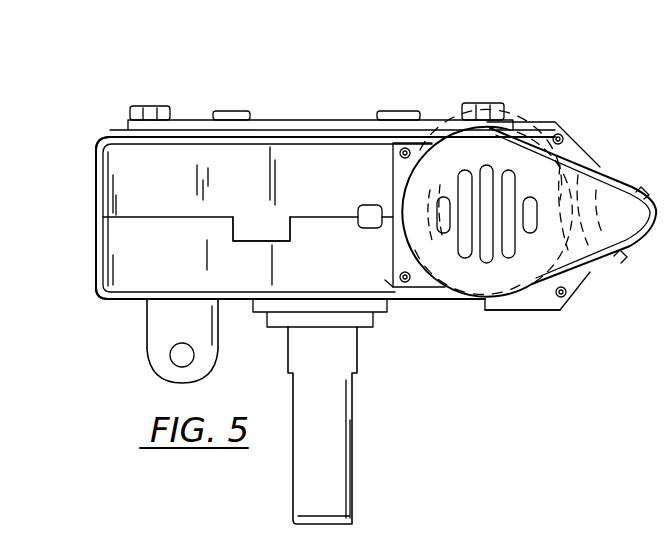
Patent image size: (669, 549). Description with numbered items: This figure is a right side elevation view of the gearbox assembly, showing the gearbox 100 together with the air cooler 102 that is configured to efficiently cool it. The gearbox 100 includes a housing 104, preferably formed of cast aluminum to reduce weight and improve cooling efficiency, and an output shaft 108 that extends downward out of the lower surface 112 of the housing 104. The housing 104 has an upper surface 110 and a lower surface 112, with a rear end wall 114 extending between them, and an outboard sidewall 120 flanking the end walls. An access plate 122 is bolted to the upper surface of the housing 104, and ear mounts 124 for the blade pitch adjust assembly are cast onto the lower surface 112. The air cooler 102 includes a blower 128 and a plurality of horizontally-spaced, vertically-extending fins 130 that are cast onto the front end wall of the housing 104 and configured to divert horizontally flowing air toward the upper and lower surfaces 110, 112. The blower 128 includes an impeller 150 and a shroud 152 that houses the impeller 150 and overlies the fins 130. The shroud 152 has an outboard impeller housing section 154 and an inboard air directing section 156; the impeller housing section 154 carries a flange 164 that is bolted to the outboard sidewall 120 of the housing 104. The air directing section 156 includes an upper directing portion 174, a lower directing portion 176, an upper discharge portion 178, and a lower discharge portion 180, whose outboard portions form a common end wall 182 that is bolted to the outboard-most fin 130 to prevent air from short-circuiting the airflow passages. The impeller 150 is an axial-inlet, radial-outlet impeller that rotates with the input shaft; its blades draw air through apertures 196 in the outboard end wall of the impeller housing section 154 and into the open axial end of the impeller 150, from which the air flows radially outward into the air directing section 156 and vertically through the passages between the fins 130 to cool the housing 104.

The gearbox 100 is at (317, 113).
The air cooler 102 is at (630, 175).
The housing 104 is at (107, 300).
The output shaft 108 is at (345, 466).
The upper surface 110 is at (110, 135).
The lower surface 112 is at (128, 302).
The rear end wall 114 is at (108, 178).
The outboard sidewall 120 is at (285, 150).
The access plate 122 is at (182, 121).
The ear mounts 124 is at (163, 368).
The blower 128 is at (578, 300).
The fins 130 is at (548, 188).
The impeller 150 is at (447, 152).
The shroud 152 is at (556, 164).
The impeller housing section 154 is at (603, 248).
The air directing section 156 is at (540, 118).
The flange 164 is at (392, 252).
The upper directing portion 174 is at (615, 165).
The lower directing portion 176 is at (578, 287).
The upper discharge portion 178 is at (512, 120).
The lower discharge portion 180 is at (515, 312).
The common end wall 182 is at (653, 205).
The apertures 196 is at (462, 183).